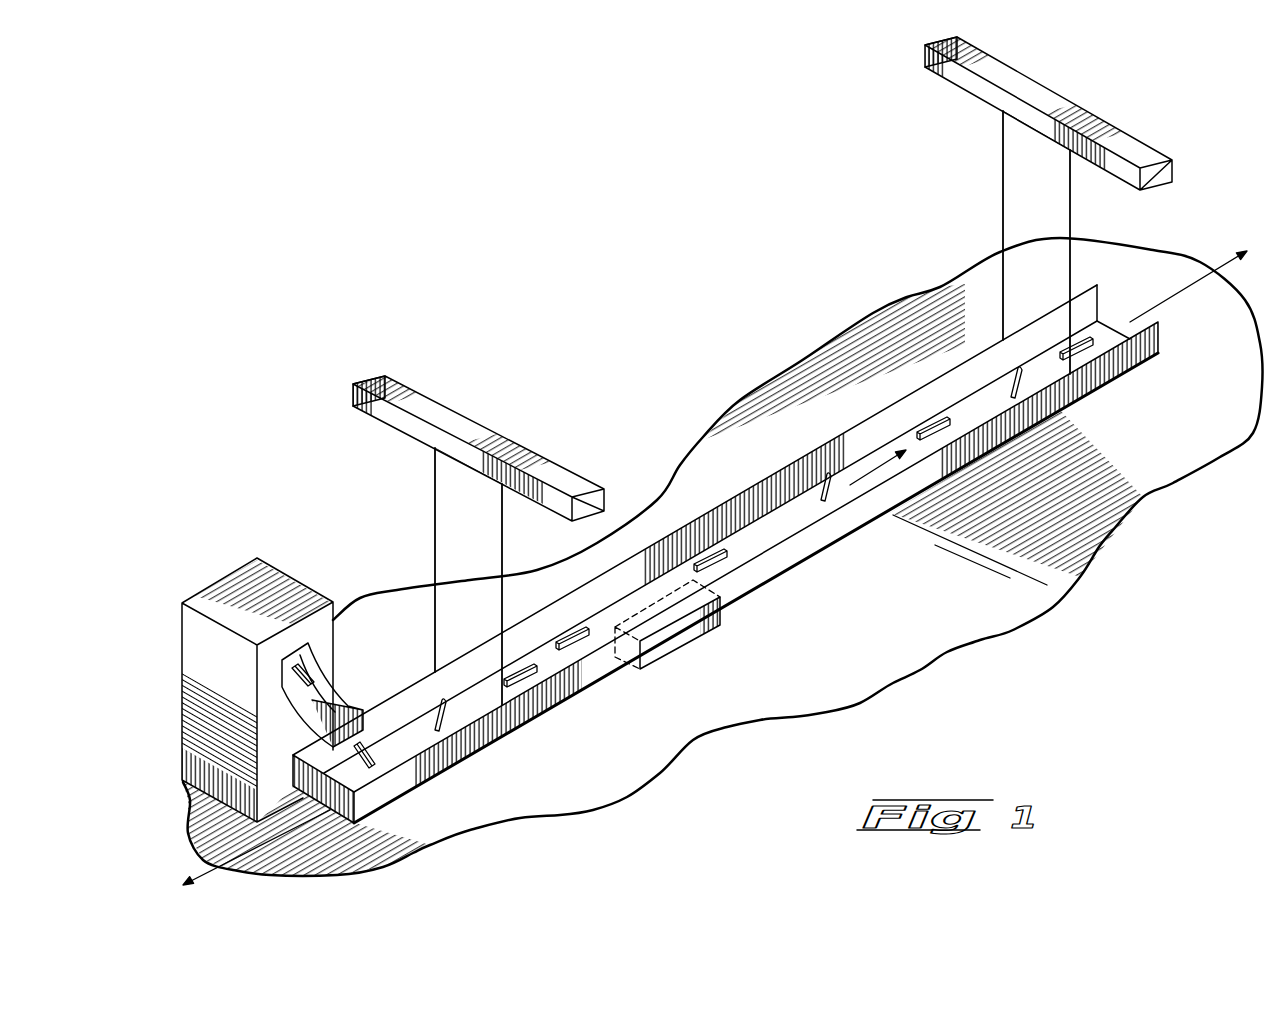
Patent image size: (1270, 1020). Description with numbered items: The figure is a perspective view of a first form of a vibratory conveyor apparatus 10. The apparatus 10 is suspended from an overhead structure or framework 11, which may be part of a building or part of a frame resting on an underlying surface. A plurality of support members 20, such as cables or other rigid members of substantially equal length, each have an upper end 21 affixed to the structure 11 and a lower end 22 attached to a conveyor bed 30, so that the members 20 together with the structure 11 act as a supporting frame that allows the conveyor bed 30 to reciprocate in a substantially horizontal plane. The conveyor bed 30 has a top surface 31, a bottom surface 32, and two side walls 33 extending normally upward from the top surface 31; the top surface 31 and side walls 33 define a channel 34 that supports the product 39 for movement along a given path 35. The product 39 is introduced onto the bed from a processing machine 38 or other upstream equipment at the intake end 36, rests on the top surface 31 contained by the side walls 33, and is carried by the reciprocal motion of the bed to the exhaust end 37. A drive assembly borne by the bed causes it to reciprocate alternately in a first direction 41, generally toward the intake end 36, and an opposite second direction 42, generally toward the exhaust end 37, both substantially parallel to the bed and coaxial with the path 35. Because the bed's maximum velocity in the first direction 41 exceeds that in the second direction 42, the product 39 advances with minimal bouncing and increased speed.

The vibratory conveyor apparatus 10 is at (779, 595).
The overhead structure or framework 11 is at (562, 485).
The support members 20 is at (432, 508).
The upper end 21 is at (490, 485).
The lower end 22 is at (490, 672).
The conveyor bed 30 is at (795, 568).
The top surface 31 is at (397, 740).
The bottom surface 32 is at (1093, 395).
The side walls 33 is at (997, 407).
The channel 34 is at (605, 588).
The given path 35 is at (860, 480).
The intake end 36 is at (330, 822).
The exhaust end 37 is at (1118, 313).
The processing machine 38 is at (240, 600).
The product 39 is at (729, 546).
The first direction 41 is at (200, 874).
The second direction 42 is at (1182, 300).